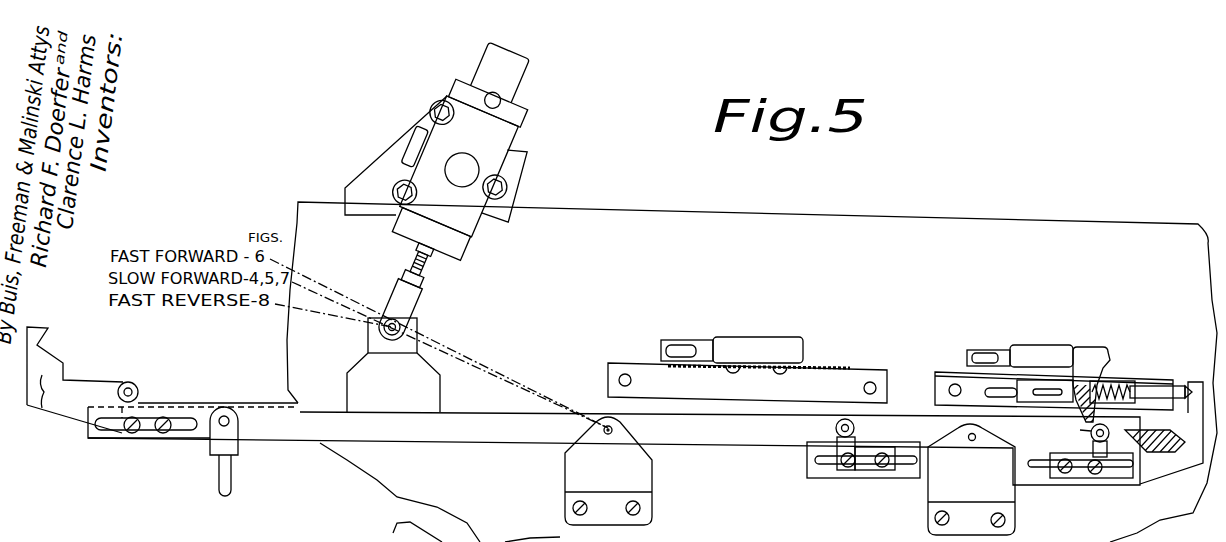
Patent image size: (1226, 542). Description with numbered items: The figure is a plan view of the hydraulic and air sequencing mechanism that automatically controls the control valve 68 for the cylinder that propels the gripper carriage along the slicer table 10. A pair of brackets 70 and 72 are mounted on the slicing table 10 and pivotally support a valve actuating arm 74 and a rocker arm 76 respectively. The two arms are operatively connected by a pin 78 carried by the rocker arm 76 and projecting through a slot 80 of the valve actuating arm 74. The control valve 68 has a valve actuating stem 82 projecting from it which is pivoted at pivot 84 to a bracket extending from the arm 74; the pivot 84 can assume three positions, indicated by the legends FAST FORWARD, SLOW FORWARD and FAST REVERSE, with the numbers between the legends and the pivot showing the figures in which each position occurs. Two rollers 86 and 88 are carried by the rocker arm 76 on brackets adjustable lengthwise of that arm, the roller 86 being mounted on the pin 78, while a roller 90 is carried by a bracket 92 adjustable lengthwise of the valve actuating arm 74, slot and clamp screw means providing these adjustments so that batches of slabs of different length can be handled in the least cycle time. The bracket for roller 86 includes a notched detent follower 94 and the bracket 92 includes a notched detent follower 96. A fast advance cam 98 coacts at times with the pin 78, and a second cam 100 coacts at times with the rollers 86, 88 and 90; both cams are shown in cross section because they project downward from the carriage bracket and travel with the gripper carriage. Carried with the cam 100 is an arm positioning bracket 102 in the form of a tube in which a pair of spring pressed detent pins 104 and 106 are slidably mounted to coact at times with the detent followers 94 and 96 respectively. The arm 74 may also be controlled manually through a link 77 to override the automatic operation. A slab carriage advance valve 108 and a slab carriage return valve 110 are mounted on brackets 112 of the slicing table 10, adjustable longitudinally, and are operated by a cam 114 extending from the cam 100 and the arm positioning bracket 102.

The slicer table 10 is at (917, 273).
The control valve 68 is at (504, 142).
The valve actuating stem 82 is at (418, 270).
The pivot 84 is at (412, 315).
The roller 90 is at (138, 392).
The bracket 92 is at (200, 437).
The notched detent follower 96 is at (161, 380).
The link 77 is at (231, 486).
The valve actuating arm 74 is at (424, 434).
The bracket 70 is at (640, 470).
The slab carriage return valve 110 is at (765, 345).
The brackets 112 is at (878, 378).
The roller 88 is at (836, 428).
The rocker arm 76 is at (910, 474).
The bracket 72 is at (929, 516).
The spring pressed detent pin 106 is at (985, 390).
The arm positioning bracket 102 is at (1025, 380).
The slab carriage advance valve 108 is at (1046, 344).
The second cam 100 is at (1084, 356).
The cam 114 is at (1094, 355).
The spring pressed detent pin 104 is at (1178, 388).
The notched detent follower 94 is at (1203, 382).
The roller 86 is at (1080, 430).
The slot 80 is at (1089, 438).
The pin 78 is at (1110, 452).
The fast advance cam 98 is at (1167, 452).